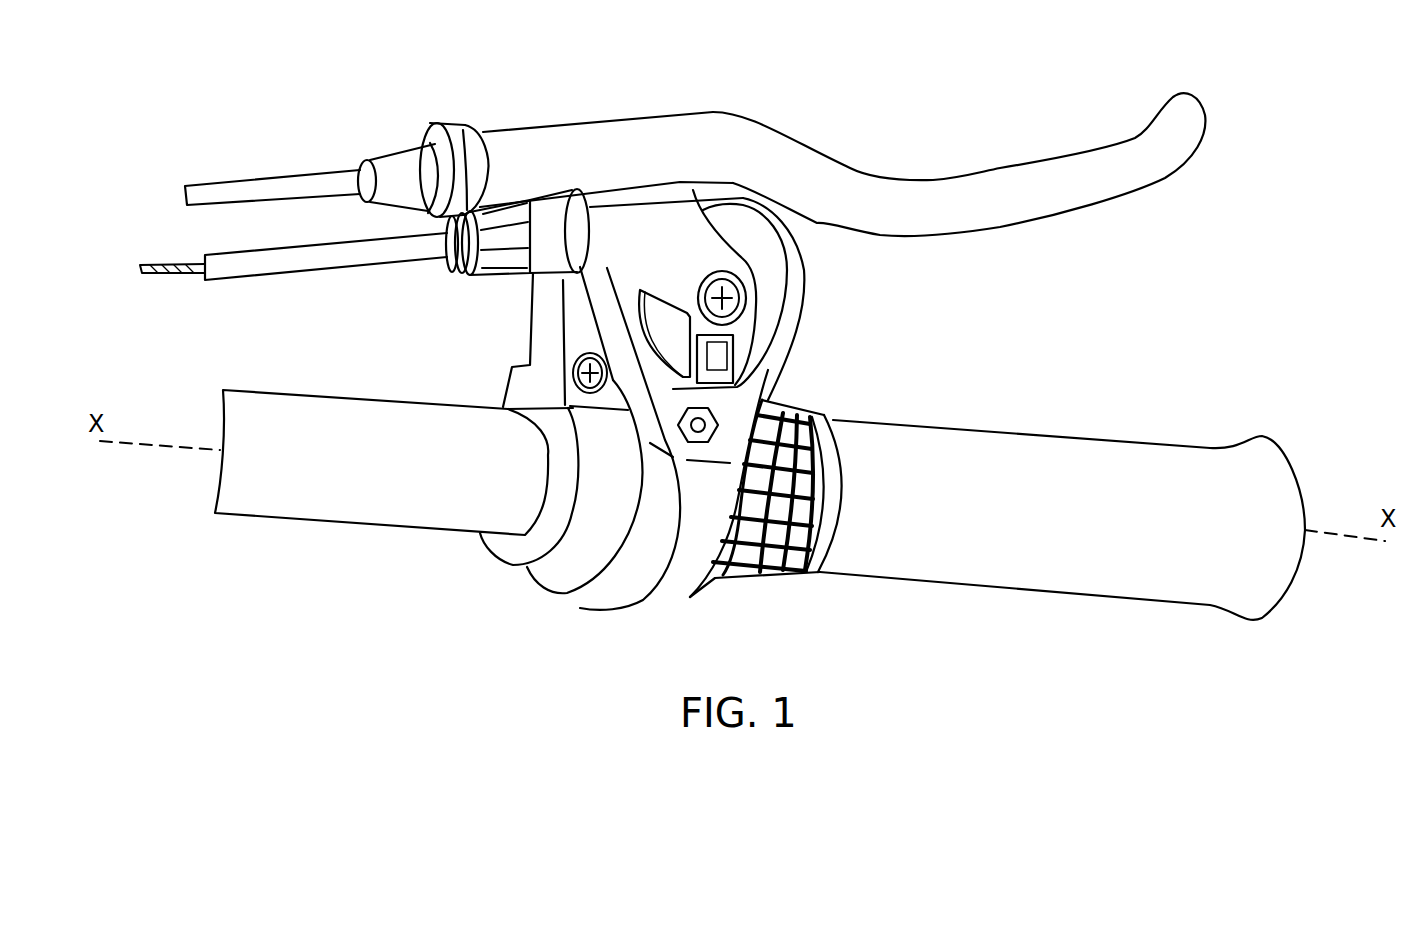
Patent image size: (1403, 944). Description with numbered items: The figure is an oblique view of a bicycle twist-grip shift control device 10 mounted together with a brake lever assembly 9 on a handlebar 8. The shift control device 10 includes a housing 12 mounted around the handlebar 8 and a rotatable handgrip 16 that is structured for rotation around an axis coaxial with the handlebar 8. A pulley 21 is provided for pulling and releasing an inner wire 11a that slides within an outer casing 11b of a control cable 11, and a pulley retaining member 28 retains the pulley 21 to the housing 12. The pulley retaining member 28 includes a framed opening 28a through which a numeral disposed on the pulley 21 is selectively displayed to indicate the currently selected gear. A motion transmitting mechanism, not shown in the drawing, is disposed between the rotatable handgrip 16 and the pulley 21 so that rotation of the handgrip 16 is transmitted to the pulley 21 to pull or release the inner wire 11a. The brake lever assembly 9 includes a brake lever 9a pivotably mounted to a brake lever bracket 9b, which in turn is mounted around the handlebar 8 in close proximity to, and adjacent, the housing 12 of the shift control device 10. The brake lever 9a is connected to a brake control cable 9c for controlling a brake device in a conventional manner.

The handlebar 8 is at (338, 505).
The brake lever assembly 9 is at (492, 101).
The brake lever 9a is at (953, 188).
The brake lever bracket 9b is at (565, 552).
The brake control cable 9c is at (282, 190).
The twist-grip shift control device 10 is at (828, 397).
The control cable 11 is at (276, 240).
The inner wire 11a is at (190, 278).
The outer casing 11b is at (335, 260).
The housing 12 is at (665, 598).
The rotatable handgrip 16 is at (760, 589).
The pulley 21 is at (783, 303).
The pulley retaining member 28 is at (678, 220).
The framed opening 28a is at (720, 372).